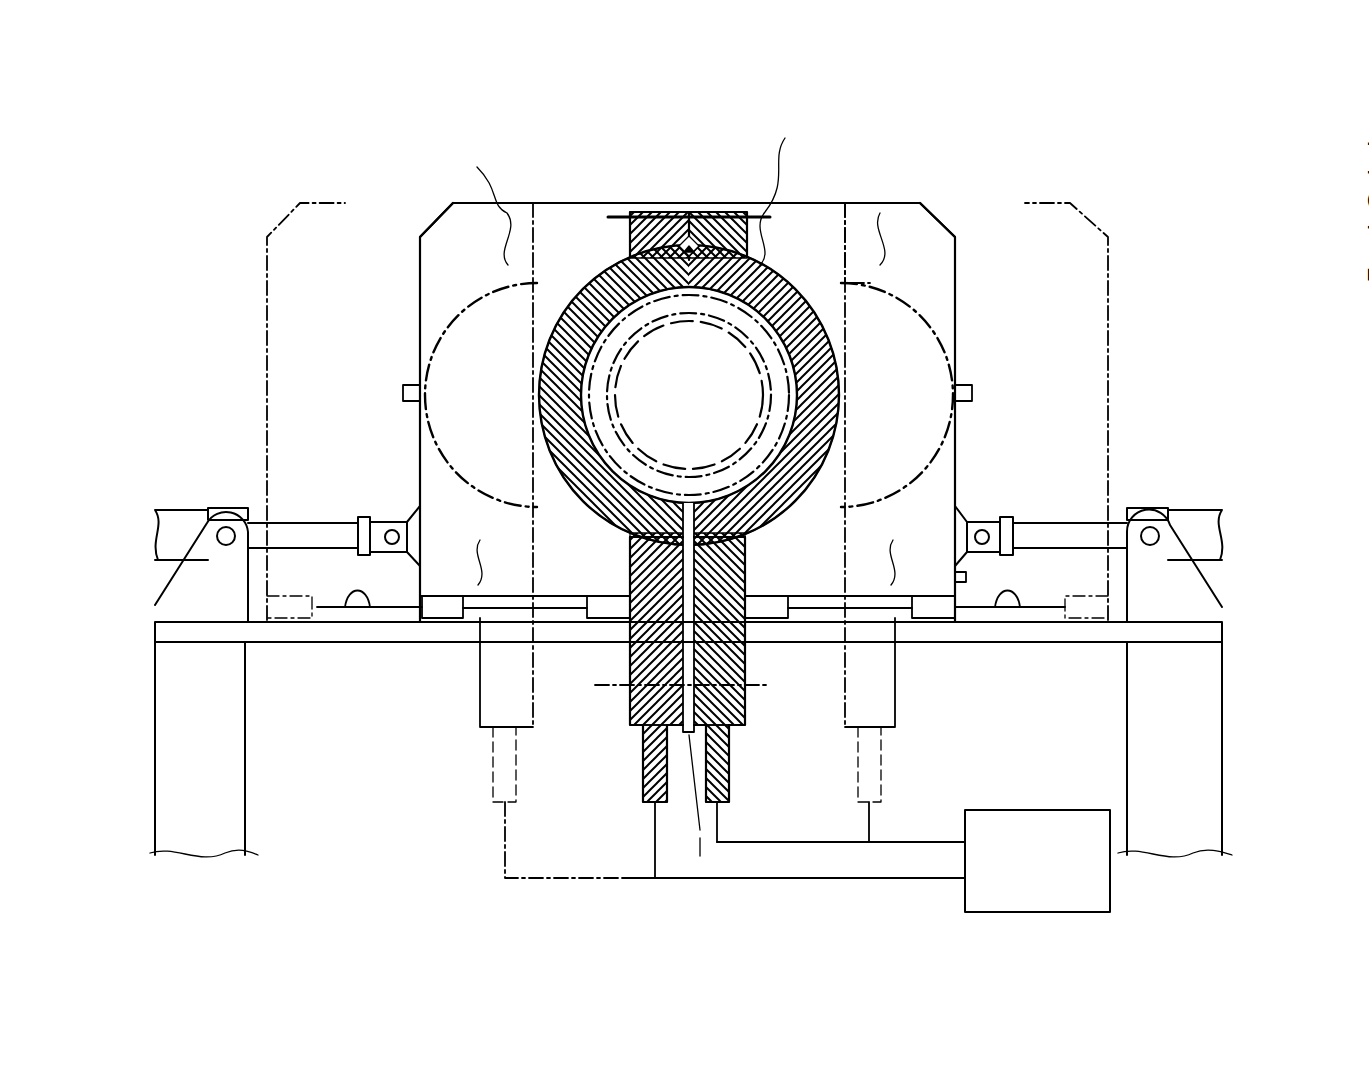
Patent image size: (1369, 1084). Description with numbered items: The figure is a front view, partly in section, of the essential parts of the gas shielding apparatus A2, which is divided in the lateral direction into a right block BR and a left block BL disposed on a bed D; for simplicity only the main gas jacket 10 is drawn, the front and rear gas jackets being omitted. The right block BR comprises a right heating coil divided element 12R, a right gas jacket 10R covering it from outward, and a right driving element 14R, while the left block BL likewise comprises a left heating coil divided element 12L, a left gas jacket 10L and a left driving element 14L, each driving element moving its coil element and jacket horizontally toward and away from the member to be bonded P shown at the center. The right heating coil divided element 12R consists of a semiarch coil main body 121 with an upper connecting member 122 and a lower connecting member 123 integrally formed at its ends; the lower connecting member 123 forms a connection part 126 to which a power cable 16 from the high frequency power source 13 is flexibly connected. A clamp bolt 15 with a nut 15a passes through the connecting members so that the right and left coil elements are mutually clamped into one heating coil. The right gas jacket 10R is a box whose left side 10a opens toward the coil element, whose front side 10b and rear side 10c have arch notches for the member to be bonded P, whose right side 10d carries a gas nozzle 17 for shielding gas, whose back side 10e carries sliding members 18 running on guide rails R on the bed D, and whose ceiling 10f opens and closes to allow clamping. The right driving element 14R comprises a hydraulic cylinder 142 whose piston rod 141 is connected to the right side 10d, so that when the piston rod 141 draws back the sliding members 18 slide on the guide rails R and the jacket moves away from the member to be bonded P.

The main gas jacket 10 is at (697, 178).
The left side 10a is at (687, 205).
The front side 10b is at (932, 225).
The rear side 10c is at (855, 215).
The right side 10d is at (957, 352).
The back side 10e is at (872, 598).
The ceiling 10f is at (662, 348).
The left gas jacket 10L is at (418, 300).
The right gas jacket 10R is at (960, 305).
The left heating coil divided element 12L is at (600, 250).
The right heating coil divided element 12R is at (770, 250).
The high frequency power source 13 is at (1062, 810).
The left driving element 14L is at (228, 500).
The right driving element 14R is at (1138, 498).
The clamp bolt 15 is at (618, 212).
The nut 15a is at (630, 690).
The power cable 16 is at (900, 840).
The gas nozzle 17 is at (973, 393).
The sliding member 18 is at (968, 672).
The coil main body 121 is at (836, 430).
The upper connecting member 122 is at (708, 212).
The lower connecting member 123 is at (785, 752).
The connection part 126 is at (730, 770).
The piston rod 141 is at (1040, 522).
The hydraulic cylinder 142 is at (1190, 512).
The gas shielding apparatus A2 is at (1241, 156).
The left block BL is at (533, 188).
The right block BR is at (905, 192).
The bed D is at (180, 625).
The member to be bonded P is at (790, 365).
The guide rail R is at (1035, 670).